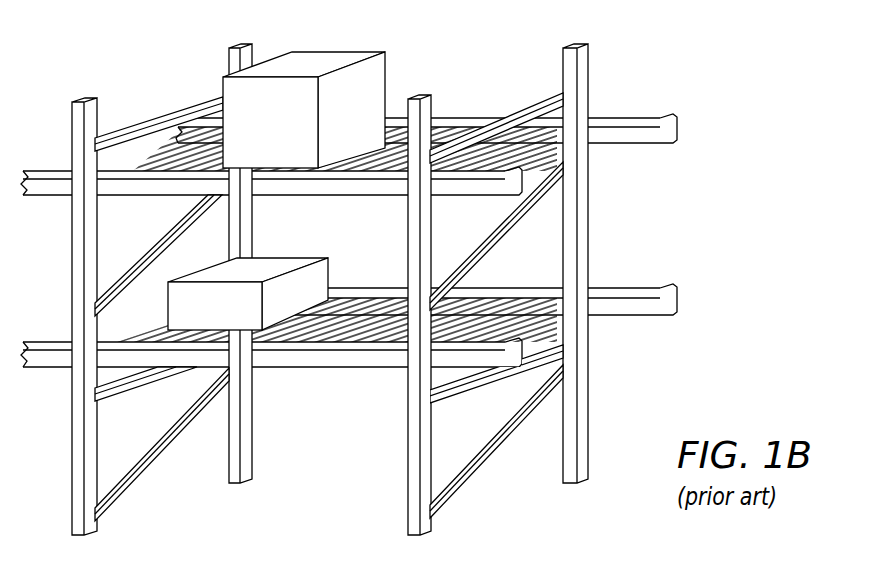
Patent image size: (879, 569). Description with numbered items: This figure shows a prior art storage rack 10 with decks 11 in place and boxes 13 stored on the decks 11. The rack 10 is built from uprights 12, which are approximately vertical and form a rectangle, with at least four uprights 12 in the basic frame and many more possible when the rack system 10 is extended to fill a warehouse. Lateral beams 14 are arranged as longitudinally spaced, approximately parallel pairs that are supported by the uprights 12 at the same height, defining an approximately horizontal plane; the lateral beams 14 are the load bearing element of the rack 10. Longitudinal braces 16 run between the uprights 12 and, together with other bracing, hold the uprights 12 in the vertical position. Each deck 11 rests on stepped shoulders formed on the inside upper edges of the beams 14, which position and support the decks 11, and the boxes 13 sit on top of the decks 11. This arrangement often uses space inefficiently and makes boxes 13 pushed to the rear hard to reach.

The storage rack 10 is at (134, 79).
The deck 11 is at (388, 152).
The upright 12 is at (80, 264).
The box 13 is at (286, 125).
The lateral beam 14 is at (52, 188).
The longitudinal brace 16 is at (196, 108).